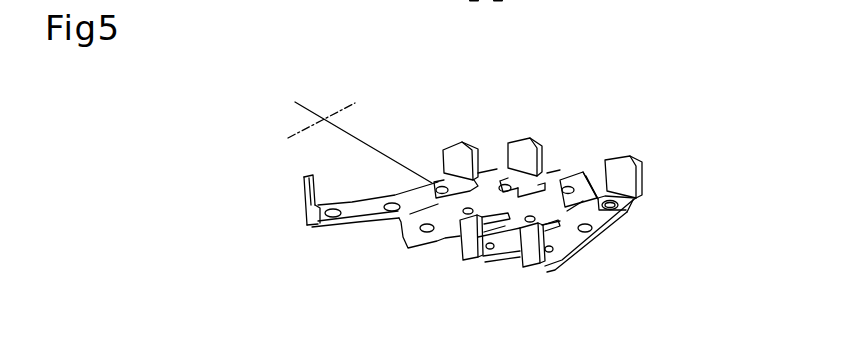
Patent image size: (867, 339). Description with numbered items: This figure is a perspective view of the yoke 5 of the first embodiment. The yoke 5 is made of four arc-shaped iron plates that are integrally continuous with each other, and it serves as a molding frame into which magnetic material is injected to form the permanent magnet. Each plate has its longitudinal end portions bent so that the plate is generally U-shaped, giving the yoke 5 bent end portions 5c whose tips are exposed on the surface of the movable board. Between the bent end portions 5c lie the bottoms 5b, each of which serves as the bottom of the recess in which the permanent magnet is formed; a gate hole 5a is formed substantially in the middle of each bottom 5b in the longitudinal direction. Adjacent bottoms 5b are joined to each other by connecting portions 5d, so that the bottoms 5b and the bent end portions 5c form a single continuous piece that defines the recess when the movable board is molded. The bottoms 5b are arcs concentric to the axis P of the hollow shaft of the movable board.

The axis P is at (328, 118).
The yoke 5 is at (629, 218).
The gate hole 5a is at (555, 242).
The bottom 5b is at (604, 195).
The bent end portion 5c is at (477, 254).
The connecting portion 5d is at (423, 207).